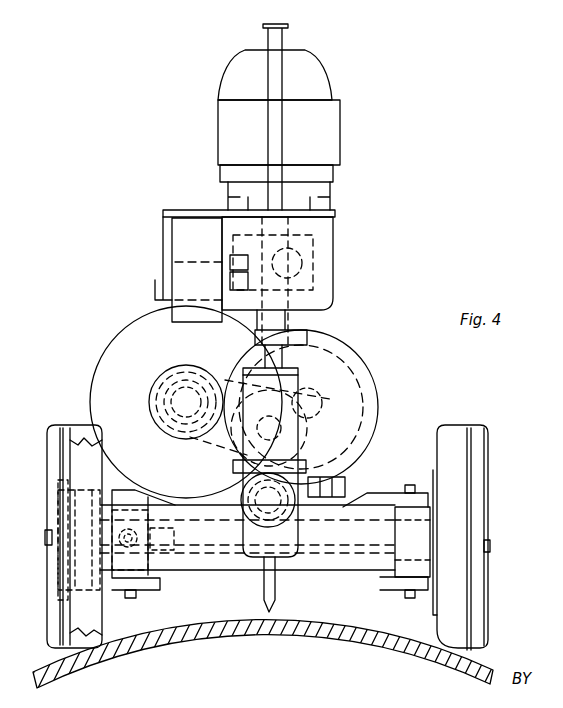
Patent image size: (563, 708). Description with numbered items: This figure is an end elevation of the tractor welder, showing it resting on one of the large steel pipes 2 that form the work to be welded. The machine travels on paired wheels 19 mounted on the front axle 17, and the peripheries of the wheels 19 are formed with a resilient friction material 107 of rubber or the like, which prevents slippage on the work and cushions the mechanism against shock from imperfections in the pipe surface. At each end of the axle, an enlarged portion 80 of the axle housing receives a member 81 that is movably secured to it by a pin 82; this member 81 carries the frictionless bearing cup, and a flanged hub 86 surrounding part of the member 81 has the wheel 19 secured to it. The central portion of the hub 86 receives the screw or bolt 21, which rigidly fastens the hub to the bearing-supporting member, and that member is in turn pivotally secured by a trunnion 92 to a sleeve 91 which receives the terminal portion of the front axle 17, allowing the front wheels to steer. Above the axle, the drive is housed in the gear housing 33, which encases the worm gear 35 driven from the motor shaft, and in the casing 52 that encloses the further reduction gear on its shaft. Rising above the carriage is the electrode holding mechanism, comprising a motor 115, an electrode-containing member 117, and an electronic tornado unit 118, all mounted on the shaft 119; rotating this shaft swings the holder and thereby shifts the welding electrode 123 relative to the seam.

The steel pipe 2 is at (356, 641).
The front axle 17 is at (208, 540).
The wheels 19 is at (52, 445).
The bolt 21 is at (48, 530).
The gear housing 33 is at (345, 375).
The worm gear 35 is at (360, 395).
The casing 52 is at (126, 333).
The enlarged portion of the axle housing 80 is at (158, 579).
The member 81 is at (412, 560).
The pin 82 is at (131, 599).
The flanged hub 86 is at (72, 585).
The sleeve 91 is at (160, 548).
The trunnion 92 is at (128, 547).
The resilient friction material 107 is at (78, 424).
The motor 115 is at (320, 87).
The electrode-containing member 117 is at (268, 77).
The electronic tornado unit 118 is at (297, 451).
The shaft 119 is at (300, 258).
The electrode 123 is at (274, 588).